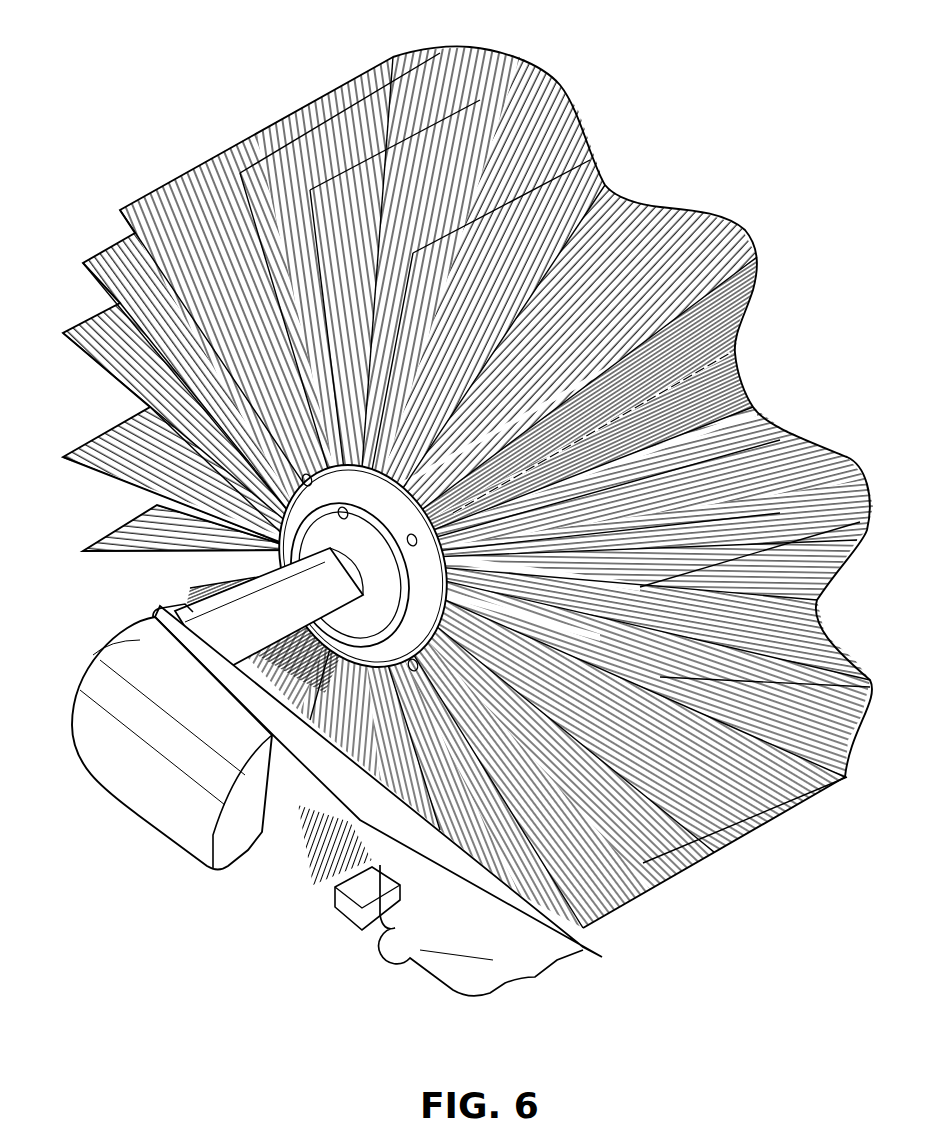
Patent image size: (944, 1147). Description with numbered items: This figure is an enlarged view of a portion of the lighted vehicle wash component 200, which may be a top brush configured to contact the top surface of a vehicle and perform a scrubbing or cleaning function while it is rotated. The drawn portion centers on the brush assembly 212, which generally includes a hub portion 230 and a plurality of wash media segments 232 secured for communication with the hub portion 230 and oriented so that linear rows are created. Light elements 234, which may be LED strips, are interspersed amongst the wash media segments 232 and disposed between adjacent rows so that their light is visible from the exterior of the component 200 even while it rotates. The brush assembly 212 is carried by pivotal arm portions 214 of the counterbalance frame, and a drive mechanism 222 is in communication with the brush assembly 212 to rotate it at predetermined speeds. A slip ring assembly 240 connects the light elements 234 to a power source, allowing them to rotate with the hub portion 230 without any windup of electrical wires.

The vehicle wash component 200 is at (164, 100).
The brush assembly 212 is at (642, 100).
The pivotal arm portions 214 is at (350, 822).
The drive mechanism 222 is at (237, 848).
The hub portion 230 is at (250, 621).
The wash media segments 232 is at (328, 92).
The light elements 234 is at (724, 358).
The slip ring assembly 240 is at (155, 800).